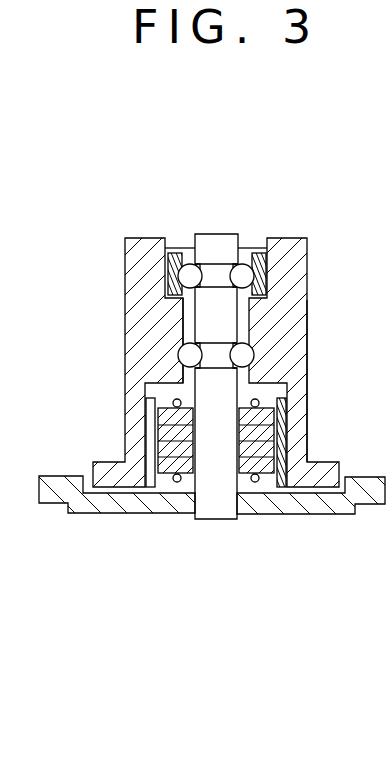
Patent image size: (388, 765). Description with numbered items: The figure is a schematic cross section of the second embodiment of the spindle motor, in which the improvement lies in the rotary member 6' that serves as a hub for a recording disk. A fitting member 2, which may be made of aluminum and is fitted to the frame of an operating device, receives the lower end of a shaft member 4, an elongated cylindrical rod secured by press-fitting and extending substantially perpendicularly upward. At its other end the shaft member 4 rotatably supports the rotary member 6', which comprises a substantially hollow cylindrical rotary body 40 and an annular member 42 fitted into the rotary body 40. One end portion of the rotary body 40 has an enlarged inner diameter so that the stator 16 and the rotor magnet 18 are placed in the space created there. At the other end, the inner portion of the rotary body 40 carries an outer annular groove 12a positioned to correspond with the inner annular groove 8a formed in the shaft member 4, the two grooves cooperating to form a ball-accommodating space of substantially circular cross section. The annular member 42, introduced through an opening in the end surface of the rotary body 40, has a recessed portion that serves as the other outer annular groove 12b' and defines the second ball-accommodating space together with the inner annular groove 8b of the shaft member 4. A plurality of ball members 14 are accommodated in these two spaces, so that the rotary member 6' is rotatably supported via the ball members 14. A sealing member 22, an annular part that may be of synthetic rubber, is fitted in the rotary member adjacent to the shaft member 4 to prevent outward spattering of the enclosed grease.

The fitting member 2 is at (310, 516).
The shaft member 4 is at (223, 236).
The rotary member 6' is at (333, 381).
The inner annular groove 8a is at (180, 352).
The inner annular groove 8b is at (180, 280).
The outer annular groove 12a is at (180, 367).
The outer annular groove 12b' is at (118, 286).
The ball members 14 is at (254, 272).
The stator 16 is at (170, 491).
The rotor magnet 18 is at (286, 440).
The sealing member 22 is at (185, 250).
The rotary body 40 is at (300, 303).
The annular member 42 is at (256, 250).